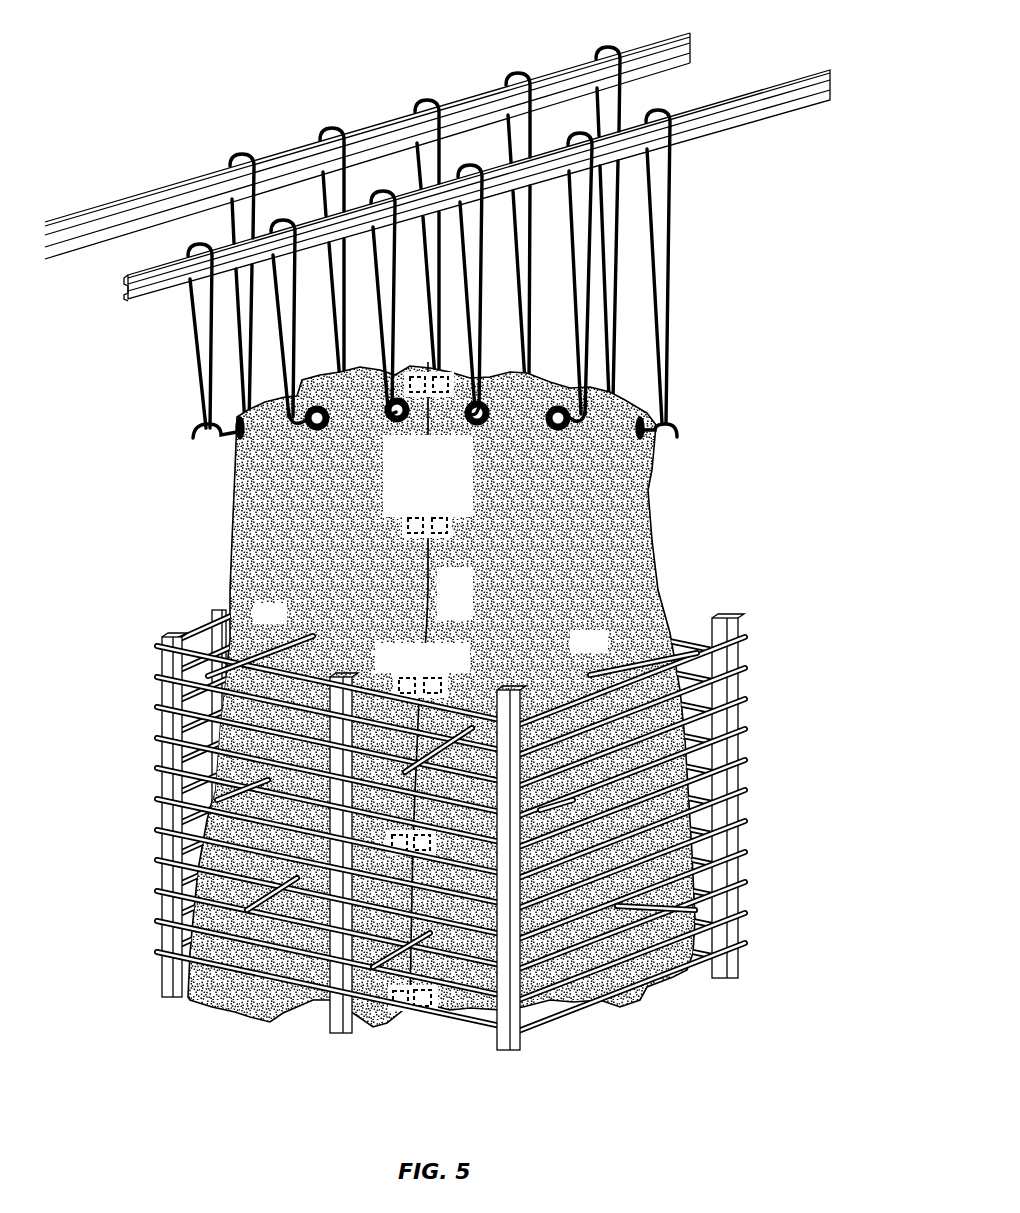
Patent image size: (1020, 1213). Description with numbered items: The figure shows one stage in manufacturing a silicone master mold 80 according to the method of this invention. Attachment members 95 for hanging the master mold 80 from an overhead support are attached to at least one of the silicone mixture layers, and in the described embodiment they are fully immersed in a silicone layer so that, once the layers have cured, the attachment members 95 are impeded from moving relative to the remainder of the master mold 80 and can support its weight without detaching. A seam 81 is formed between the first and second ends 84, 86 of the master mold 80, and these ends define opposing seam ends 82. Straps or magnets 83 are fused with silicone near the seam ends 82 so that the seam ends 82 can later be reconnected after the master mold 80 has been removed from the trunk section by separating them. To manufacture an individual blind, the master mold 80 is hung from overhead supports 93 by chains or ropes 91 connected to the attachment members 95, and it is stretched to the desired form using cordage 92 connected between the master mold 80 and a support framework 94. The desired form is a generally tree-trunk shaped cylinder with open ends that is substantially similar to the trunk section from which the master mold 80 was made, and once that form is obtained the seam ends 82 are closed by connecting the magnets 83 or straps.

The master mold 80 is at (454, 542).
The seam 81 is at (427, 620).
The seam ends 82 is at (425, 479).
The straps or magnets 83 is at (413, 518).
The first end 84 is at (425, 837).
The second end 86 is at (486, 715).
The chains or ropes 91 is at (528, 70).
The cordage 92 is at (300, 640).
The overhead supports 93 is at (115, 203).
The support framework 94 is at (160, 812).
The attachment members 95 is at (195, 424).